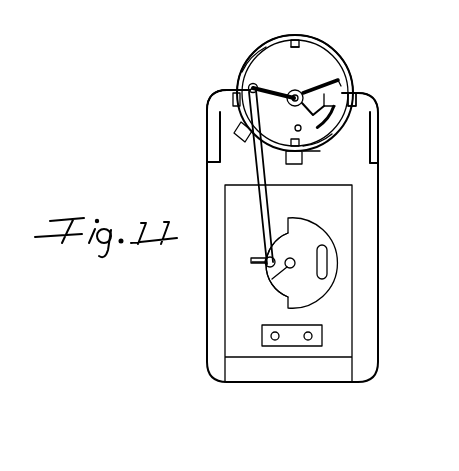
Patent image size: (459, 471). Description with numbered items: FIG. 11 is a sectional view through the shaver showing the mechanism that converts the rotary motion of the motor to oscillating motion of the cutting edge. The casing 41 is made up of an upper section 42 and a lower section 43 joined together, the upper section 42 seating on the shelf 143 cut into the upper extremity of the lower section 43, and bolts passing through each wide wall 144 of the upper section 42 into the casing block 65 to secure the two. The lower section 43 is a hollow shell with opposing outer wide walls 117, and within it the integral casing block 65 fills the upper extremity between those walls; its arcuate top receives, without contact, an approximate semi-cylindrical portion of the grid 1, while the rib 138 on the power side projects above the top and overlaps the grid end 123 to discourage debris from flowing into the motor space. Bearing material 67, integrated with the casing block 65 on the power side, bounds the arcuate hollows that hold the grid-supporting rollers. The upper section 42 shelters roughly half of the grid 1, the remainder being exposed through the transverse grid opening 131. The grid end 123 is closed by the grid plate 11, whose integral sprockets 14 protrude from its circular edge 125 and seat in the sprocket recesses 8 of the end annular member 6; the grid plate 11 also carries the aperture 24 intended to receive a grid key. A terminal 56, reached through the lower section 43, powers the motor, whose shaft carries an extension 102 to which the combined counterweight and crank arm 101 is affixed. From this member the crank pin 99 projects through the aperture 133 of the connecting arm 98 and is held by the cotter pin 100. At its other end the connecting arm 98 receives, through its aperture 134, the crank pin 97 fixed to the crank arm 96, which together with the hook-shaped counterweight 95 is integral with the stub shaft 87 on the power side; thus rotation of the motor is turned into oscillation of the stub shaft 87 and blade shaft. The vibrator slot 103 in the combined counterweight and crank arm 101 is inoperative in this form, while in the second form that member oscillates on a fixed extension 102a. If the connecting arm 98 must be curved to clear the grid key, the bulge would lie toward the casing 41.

The grid 1 is at (342, 66).
The end annular member 6 is at (265, 52).
The sprocket recesses 8 is at (356, 93).
The grid plate 11 is at (302, 56).
The sprockets 14 is at (312, 37).
The aperture 24 is at (320, 124).
The casing 41 is at (180, 164).
The upper section 42 is at (380, 145).
The lower section 43 is at (380, 222).
The terminal 56 is at (280, 325).
The casing block 65 is at (354, 182).
The bearing material 67 is at (243, 143).
The stub shaft 87 is at (288, 113).
The counterweight 95 is at (321, 86).
The crank arm 96 is at (292, 90).
The crank pin 97 is at (280, 84).
The connecting arm 98 is at (272, 203).
The crank pin 99 is at (267, 259).
The cotter pin 100 is at (252, 262).
The combined counterweight and crank arm 101 is at (295, 281).
The extension 102 is at (311, 253).
The extension 102a is at (276, 280).
The vibrator slot 103 is at (316, 292).
The outer wide walls 117 is at (207, 280).
The grid end 123 is at (252, 54).
The circular edge 125 is at (346, 72).
The transverse grid opening 131 is at (228, 90).
The aperture 133 is at (265, 269).
The aperture 134 is at (250, 86).
The rib 138 is at (320, 148).
The shelf 143 is at (212, 165).
The wide wall 144 is at (207, 130).